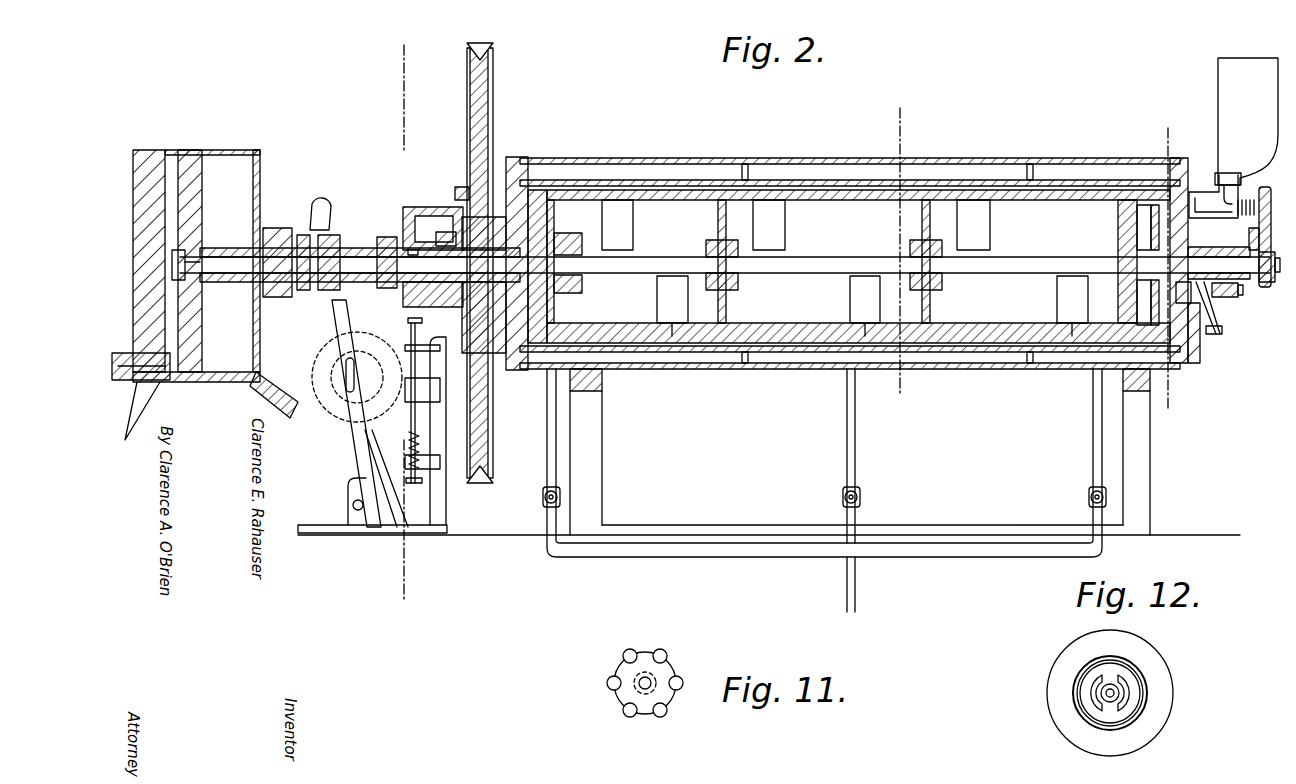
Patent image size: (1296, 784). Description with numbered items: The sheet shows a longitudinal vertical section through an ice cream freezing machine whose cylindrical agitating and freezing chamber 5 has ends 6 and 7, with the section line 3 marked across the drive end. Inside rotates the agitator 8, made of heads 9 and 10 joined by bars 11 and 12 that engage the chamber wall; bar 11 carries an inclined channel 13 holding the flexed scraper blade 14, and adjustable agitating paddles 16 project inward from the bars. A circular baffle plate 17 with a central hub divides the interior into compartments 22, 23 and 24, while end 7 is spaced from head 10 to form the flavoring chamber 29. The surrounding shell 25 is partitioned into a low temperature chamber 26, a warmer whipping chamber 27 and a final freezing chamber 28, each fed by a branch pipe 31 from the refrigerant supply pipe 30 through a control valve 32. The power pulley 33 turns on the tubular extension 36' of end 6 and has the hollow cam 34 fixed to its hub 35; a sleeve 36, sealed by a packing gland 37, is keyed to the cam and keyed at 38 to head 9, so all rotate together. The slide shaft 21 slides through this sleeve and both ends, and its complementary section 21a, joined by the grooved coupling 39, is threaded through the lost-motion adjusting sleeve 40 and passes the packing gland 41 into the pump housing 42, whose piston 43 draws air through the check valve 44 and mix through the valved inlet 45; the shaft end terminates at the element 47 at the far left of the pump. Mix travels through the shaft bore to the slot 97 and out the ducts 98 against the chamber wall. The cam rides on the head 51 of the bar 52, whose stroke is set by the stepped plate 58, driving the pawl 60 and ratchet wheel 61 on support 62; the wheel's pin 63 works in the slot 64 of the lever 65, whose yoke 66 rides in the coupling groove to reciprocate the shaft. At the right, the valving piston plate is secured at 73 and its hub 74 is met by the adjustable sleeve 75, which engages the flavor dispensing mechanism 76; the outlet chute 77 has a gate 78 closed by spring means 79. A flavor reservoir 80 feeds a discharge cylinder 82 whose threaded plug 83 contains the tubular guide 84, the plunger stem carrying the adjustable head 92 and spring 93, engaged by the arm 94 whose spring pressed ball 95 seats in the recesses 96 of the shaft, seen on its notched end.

In FIG. 2, the section line 3- 3 is at (404, 58).
In FIG. 2, the agitating and freezing chamber 5 is at (900, 128).
In FIG. 2, the chamber end 6 is at (1168, 128).
In FIG. 2, the chamber end 7 is at (1170, 145).
In FIG. 2, the agitator 8 is at (668, 200).
In FIG. 2, the head 9 is at (536, 192).
In FIG. 2, the head 10 is at (1125, 195).
In FIG. 2, the bar 11 is at (812, 201).
In FIG. 2, the bar 12 is at (760, 344).
In FIG. 2, the channel 13 is at (922, 228).
In FIG. 2, the scraper blade 14 is at (856, 201).
In FIG. 2, the agitating paddles 16 is at (617, 225).
In FIG. 2, the baffle plate 17 is at (515, 186).
In FIG. 2, the slide shaft 21 is at (1016, 268).
In FIG. 11, the slide shaft 21 is at (645, 683).
In FIG. 2, the complementary section of slide shaft 21a is at (300, 296).
In FIG. 2, the compartment 22 is at (660, 237).
In FIG. 2, the compartment 23 is at (822, 239).
In FIG. 2, the compartment 24 is at (1028, 231).
In FIG. 2, the shell 25 is at (960, 370).
In FIG. 2, the low temperature chamber 26 is at (706, 370).
In FIG. 2, the higher temperature chamber 27 is at (798, 370).
In FIG. 2, the chamber 28 is at (1056, 362).
In FIG. 2, the flavoring chamber 29 is at (1150, 219).
In FIG. 2, the refrigerant supply pipe 30 is at (858, 587).
In FIG. 2, the branch pipe 31 is at (546, 470).
In FIG. 2, the control valve 32 is at (542, 497).
In FIG. 2, the power pulley 33 is at (492, 90).
In FIG. 2, the hollow cam 34 is at (416, 208).
In FIG. 2, the hub 35 is at (458, 194).
In FIG. 2, the sleeve 36 is at (411, 218).
In FIG. 2, the tubular extension 36' is at (443, 216).
In FIG. 2, the packing gland 37 is at (384, 244).
In FIG. 2, the key 38 is at (537, 238).
In FIG. 2, the grooved coupling 39 is at (334, 240).
In FIG. 2, the lost-motion adjusting sleeve 40 is at (236, 250).
In FIG. 2, the packing gland 41 is at (278, 230).
In FIG. 2, the pump housing 42 is at (262, 170).
In FIG. 2, the piston 43 is at (204, 165).
In FIG. 2, the air inlet check valve 44 is at (116, 353).
In FIG. 2, the valved inlet 45 is at (283, 420).
In FIG. 2, the shaft end nut 47 is at (178, 262).
In FIG. 2, the head 51 is at (404, 400).
In FIG. 2, the bar 52 is at (410, 372).
In FIG. 2, the plate 58 is at (405, 405).
In FIG. 2, the pawl 60 is at (394, 362).
In FIG. 2, the ratchet wheel 61 is at (377, 385).
In FIG. 2, the support 62 is at (368, 434).
In FIG. 2, the pin 63 is at (322, 398).
In FIG. 2, the slot 64 is at (344, 369).
In FIG. 2, the lever 65 is at (405, 332).
In FIG. 2, the yoke 66 is at (1140, 285).
In FIG. 2, the securing point 73 is at (1120, 276).
In FIG. 2, the hub 74 is at (1148, 247).
In FIG. 2, the longitudinally adjustable sleeve 75 is at (1218, 296).
In FIG. 2, the flavor dispensing mechanism 76 is at (1250, 190).
In FIG. 2, the outlet chute 77 is at (1206, 340).
In FIG. 2, the gate 78 is at (1222, 305).
In FIG. 2, the adjustable spring means 79 is at (1219, 321).
In FIG. 2, the flavor containing reservoir 80 is at (1240, 68).
In FIG. 2, the discharge cylinder 82 is at (1203, 192).
In FIG. 12, the threaded plug 83 is at (1158, 672).
In FIG. 12, the tubular guide 84 is at (1124, 695).
In FIG. 2, the adjustable head 92 is at (1266, 190).
In FIG. 2, the expanding helical spring 93 is at (1233, 172).
In FIG. 2, the arm 94 is at (1262, 232).
In FIG. 2, the spring pressed ball 95 is at (1242, 248).
In FIG. 11, the recesses 96 is at (668, 666).
In FIG. 2, the slot 97 is at (574, 298).
In FIG. 2, the ducts 98 is at (554, 312).